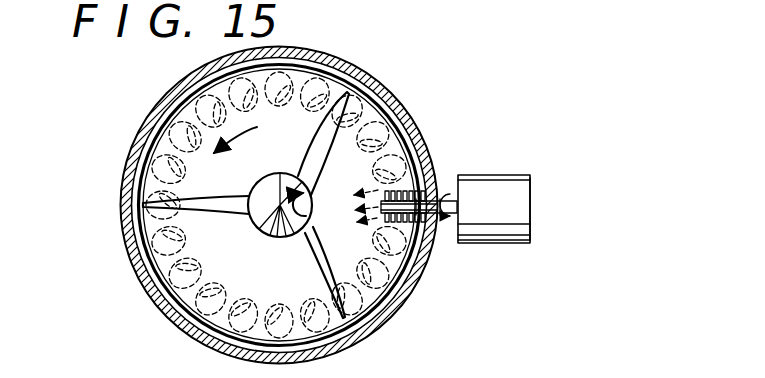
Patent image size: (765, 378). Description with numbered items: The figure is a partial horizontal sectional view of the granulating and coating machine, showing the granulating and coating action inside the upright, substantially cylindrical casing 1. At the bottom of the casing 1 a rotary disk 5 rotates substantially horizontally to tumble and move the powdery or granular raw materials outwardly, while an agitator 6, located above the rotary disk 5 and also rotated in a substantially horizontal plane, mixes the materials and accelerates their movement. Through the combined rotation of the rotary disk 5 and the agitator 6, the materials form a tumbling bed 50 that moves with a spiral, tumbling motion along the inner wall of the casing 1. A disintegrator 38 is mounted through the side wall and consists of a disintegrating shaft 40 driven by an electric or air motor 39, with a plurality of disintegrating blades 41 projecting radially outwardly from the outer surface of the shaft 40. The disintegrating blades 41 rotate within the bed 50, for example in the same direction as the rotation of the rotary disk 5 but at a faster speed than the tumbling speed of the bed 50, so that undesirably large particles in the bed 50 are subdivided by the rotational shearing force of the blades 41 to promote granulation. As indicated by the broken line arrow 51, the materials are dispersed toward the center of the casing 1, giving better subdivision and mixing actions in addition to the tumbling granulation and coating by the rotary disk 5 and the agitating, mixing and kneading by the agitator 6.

The casing 1 is at (360, 73).
The rotary disk 5 is at (143, 140).
The agitator 6 is at (163, 229).
The disintegrator 38 is at (518, 170).
The motor 39 is at (531, 198).
The disintegrating shaft 40 is at (423, 220).
The disintegrating blades 41 is at (417, 240).
The bed 50 is at (377, 124).
The broken line arrow 51 is at (372, 186).